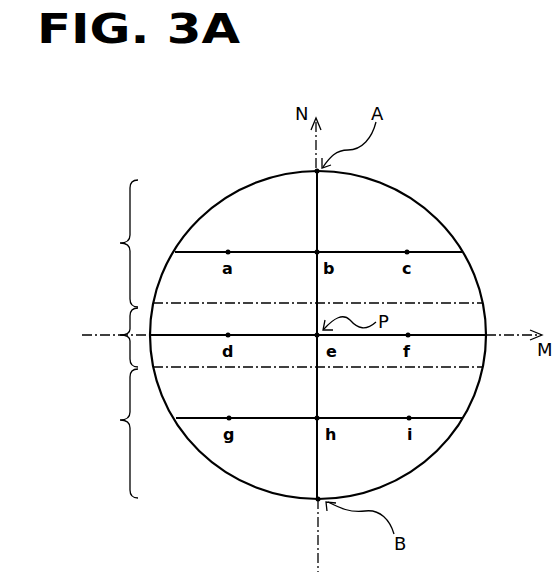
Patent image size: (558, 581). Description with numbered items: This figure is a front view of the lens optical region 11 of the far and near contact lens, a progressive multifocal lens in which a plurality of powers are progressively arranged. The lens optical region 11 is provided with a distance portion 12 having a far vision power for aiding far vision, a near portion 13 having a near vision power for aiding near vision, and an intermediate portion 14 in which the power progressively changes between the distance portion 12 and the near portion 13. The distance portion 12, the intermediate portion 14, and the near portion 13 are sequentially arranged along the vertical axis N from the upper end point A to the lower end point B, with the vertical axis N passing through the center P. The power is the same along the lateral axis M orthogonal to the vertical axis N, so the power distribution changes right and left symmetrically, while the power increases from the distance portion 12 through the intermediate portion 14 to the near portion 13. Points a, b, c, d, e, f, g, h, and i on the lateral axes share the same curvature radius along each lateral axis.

The lens optical region 11 is at (419, 203).
The distance portion 12 is at (113, 243).
The near portion 13 is at (113, 433).
The intermediate portion 14 is at (113, 337).